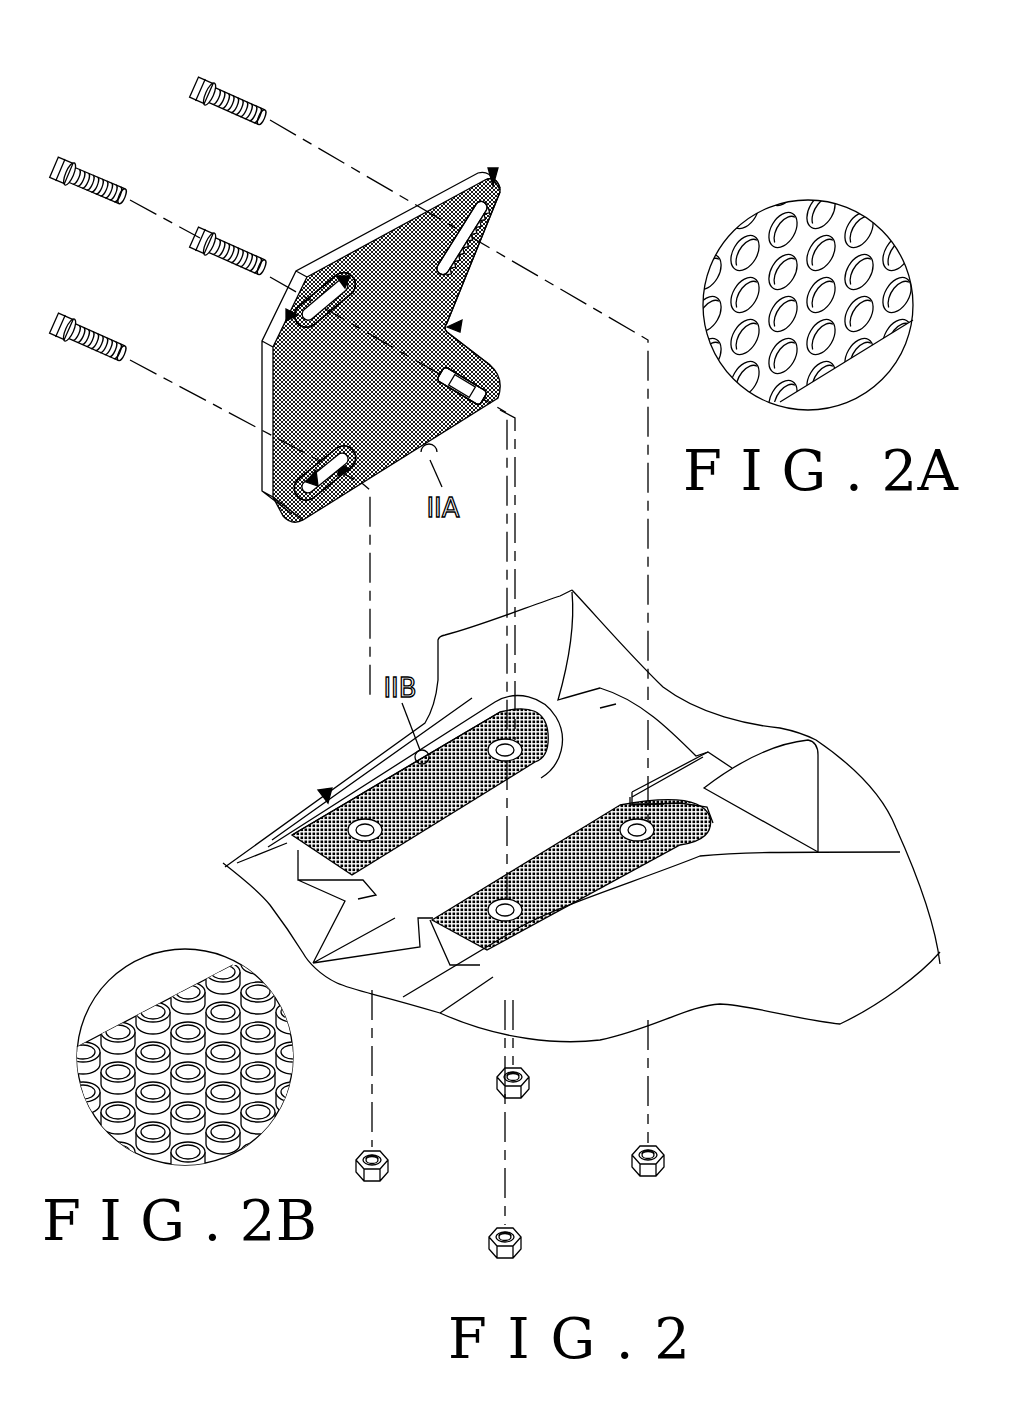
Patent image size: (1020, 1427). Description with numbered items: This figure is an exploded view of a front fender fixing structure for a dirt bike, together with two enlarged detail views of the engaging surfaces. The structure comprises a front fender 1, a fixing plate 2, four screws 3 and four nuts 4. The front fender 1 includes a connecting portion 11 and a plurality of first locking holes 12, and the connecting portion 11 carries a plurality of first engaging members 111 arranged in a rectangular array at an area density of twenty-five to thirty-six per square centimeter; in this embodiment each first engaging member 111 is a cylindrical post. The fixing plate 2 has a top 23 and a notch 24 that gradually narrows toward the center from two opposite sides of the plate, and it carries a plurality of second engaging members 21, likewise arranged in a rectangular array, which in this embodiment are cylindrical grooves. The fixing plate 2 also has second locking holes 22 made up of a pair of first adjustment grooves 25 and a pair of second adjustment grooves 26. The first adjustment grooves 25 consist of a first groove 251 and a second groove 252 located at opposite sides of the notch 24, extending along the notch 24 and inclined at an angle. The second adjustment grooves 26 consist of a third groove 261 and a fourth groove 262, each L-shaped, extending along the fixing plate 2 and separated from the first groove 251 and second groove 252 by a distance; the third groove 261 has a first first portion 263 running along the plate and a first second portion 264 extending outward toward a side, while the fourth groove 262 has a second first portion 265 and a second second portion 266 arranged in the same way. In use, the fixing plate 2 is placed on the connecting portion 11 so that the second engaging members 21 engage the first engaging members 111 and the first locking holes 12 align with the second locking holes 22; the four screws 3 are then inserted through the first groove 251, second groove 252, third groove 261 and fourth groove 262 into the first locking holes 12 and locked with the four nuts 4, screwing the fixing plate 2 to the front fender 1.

In FIG. 2, the front fender 1 is at (842, 968).
In FIG. 2, the fixing plate 2 is at (262, 461).
In FIG. 2, the screws 3 is at (208, 78).
In FIG. 2, the nuts 4 is at (527, 1093).
In FIG. 2, the connecting portion 11 is at (325, 798).
In FIG. 2, the first locking holes 12 is at (668, 804).
In FIG. 2, the second engaging members 21 is at (268, 483).
In FIG. 2A, the second engaging members 21 is at (795, 217).
In FIG. 2, the second locking holes 22 is at (602, 110).
In FIG. 2, the top 23 is at (493, 168).
In FIG. 2, the notch 24 is at (460, 325).
In FIG. 2, the first adjustment grooves 25 is at (595, 183).
In FIG. 2, the second adjustment grooves 26 is at (450, 120).
In FIG. 2, the first engaging members 111 is at (285, 847).
In FIG. 2B, the first engaging members 111 is at (155, 1015).
In FIG. 2, the first groove 251 is at (507, 372).
In FIG. 2, the second groove 252 is at (480, 207).
In FIG. 2, the third groove 261 is at (370, 268).
In FIG. 2, the fourth groove 262 is at (357, 262).
In FIG. 2, the first first portion 263 is at (306, 486).
In FIG. 2, the first second portion 264 is at (373, 487).
In FIG. 2, the second first portion 265 is at (286, 314).
In FIG. 2, the second second portion 266 is at (343, 280).